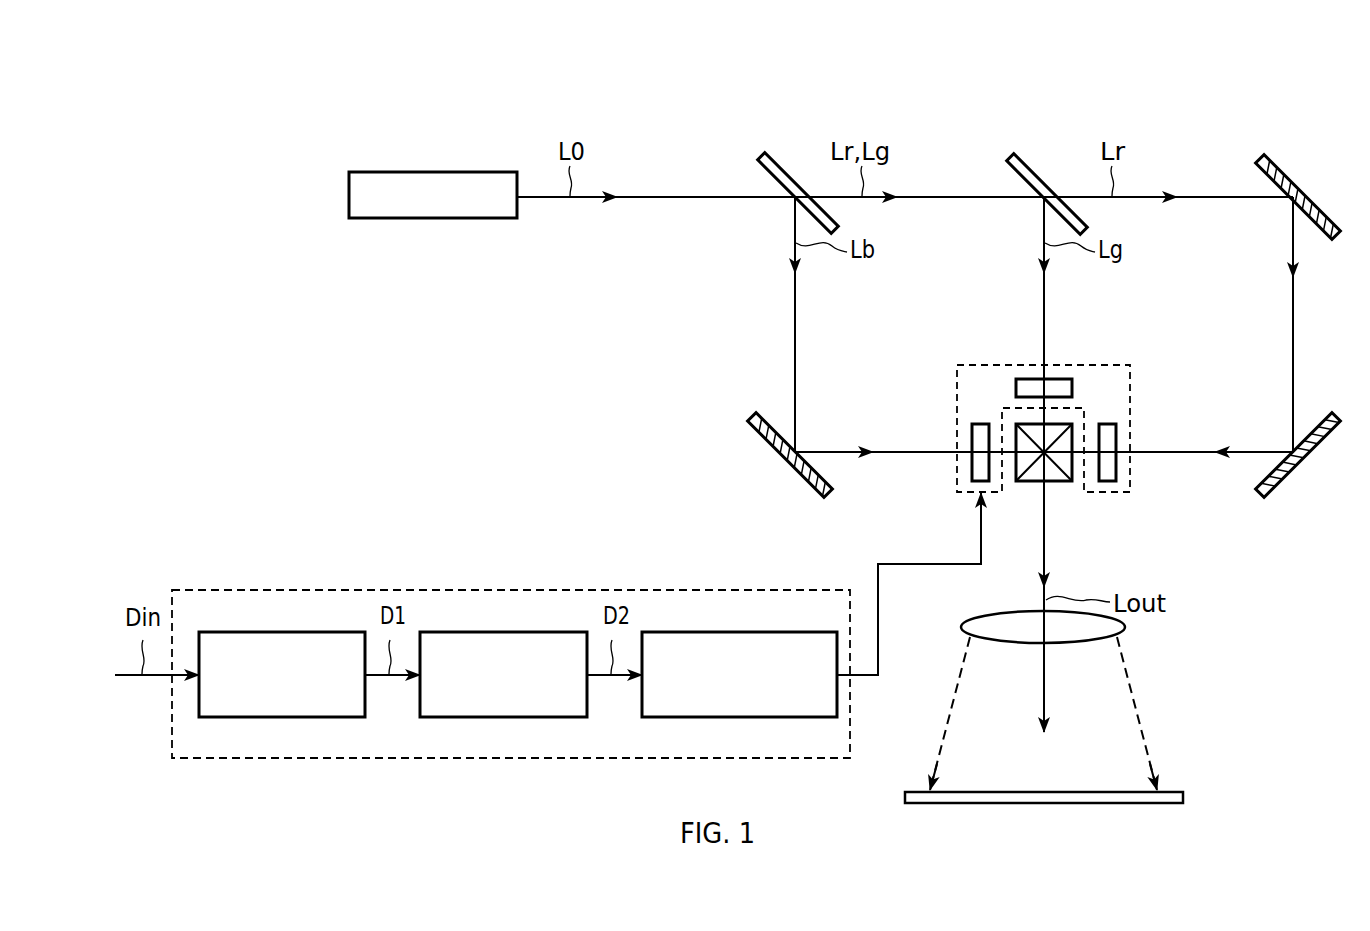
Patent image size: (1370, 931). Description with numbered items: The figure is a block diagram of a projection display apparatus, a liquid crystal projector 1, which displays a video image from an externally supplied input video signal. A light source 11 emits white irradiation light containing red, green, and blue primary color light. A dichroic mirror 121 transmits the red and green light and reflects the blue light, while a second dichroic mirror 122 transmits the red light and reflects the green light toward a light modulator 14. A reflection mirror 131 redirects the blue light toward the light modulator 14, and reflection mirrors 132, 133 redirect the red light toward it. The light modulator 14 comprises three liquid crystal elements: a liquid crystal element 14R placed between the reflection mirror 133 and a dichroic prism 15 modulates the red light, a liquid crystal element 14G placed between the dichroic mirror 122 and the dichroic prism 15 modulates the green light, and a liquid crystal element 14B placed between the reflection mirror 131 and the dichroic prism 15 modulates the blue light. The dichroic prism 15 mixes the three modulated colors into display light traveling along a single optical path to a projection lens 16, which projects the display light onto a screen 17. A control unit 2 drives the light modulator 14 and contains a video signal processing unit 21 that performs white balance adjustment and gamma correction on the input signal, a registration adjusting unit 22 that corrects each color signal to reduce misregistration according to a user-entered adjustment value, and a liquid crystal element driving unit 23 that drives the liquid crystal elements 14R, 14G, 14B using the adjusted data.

The liquid crystal projector 1 is at (1122, 33).
The light source 11 is at (433, 172).
The dichroic mirror 121 is at (789, 169).
The dichroic mirror 122 is at (1039, 169).
The reflection mirror 131 is at (777, 450).
The reflection mirror 132 is at (1282, 170).
The reflection mirror 133 is at (1313, 458).
The light modulator 14 is at (986, 364).
The liquid crystal element 14B is at (972, 438).
The liquid crystal element 14G is at (1065, 380).
The liquid crystal element 14R is at (1106, 481).
The dichroic prism 15 is at (1060, 428).
The projection lens 16 is at (1122, 623).
The screen 17 is at (1184, 797).
The control unit 2 is at (532, 591).
The video signal processing unit 21 is at (282, 632).
The registration adjusting unit 22 is at (504, 632).
The liquid crystal element driving unit 23 is at (739, 632).